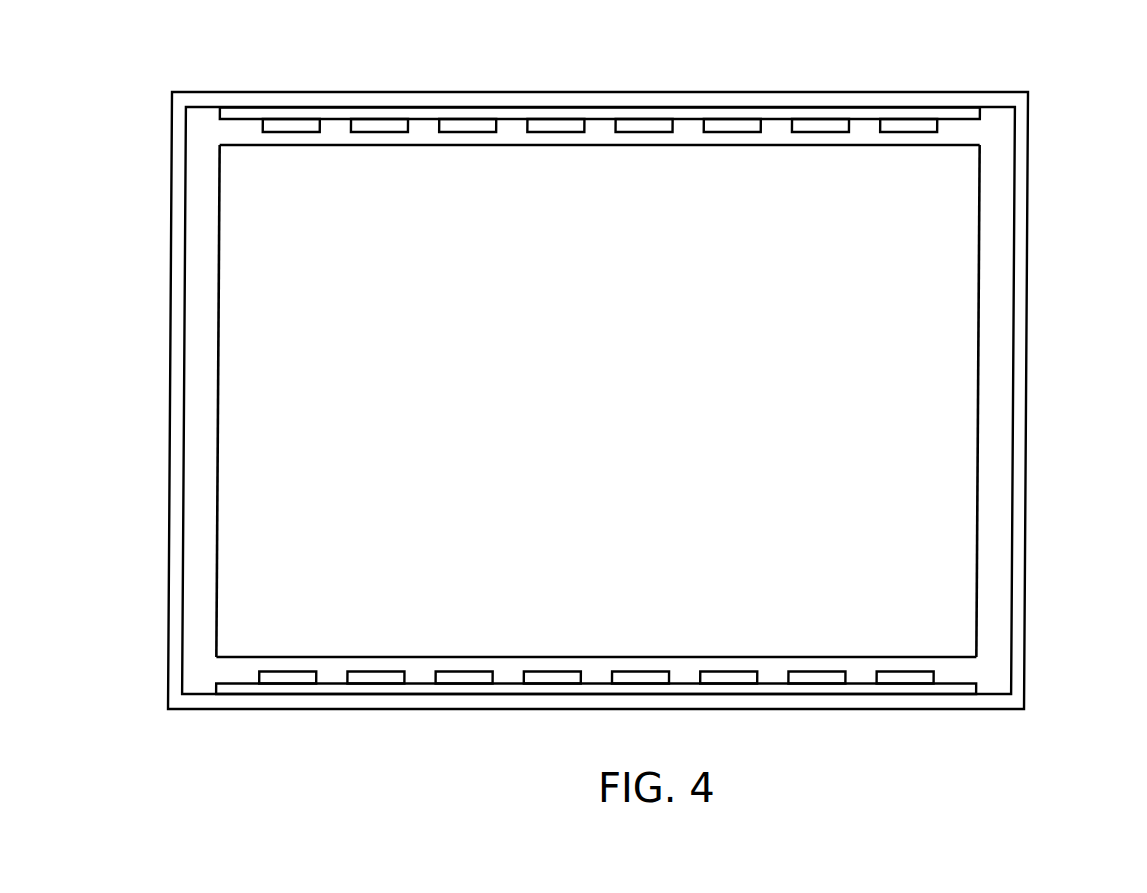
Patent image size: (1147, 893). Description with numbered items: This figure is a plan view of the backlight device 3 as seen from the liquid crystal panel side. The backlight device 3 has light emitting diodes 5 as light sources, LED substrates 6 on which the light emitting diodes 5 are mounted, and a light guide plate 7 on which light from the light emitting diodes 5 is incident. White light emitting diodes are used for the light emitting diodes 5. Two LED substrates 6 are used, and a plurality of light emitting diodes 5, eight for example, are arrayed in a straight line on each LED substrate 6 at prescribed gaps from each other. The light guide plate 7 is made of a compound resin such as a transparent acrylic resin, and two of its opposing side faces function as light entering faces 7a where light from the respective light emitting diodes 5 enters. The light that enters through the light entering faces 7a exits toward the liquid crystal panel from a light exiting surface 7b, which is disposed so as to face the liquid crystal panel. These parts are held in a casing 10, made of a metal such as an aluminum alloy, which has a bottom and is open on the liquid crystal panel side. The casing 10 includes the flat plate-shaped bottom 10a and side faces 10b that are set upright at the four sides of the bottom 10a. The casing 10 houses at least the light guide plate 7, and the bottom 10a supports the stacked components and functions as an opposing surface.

The backlight device 3 is at (627, 403).
The light emitting diode 5 is at (307, 122).
The LED substrate 6 is at (602, 112).
The light guide plate 7 is at (549, 402).
The light entering face 7a is at (237, 144).
The light exiting surface 7b is at (234, 302).
The casing 10 is at (640, 400).
The bottom 10a is at (998, 325).
The side face 10b is at (1022, 518).